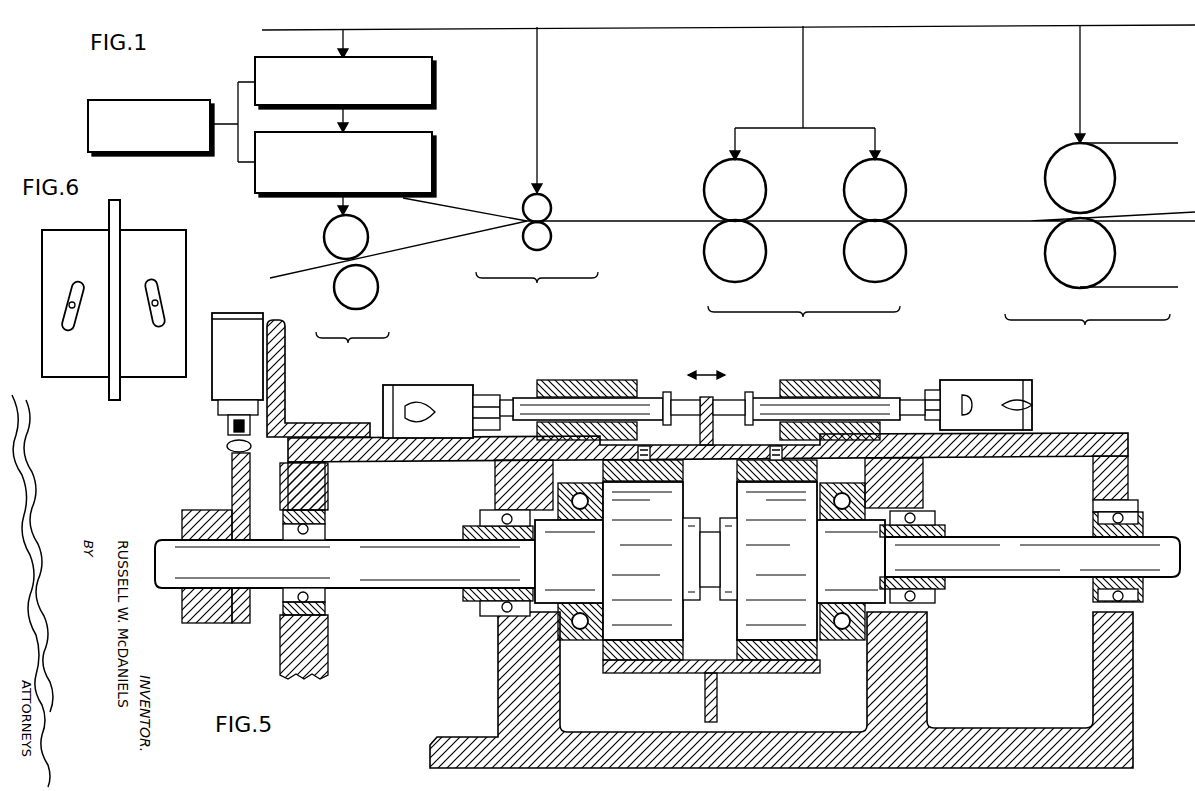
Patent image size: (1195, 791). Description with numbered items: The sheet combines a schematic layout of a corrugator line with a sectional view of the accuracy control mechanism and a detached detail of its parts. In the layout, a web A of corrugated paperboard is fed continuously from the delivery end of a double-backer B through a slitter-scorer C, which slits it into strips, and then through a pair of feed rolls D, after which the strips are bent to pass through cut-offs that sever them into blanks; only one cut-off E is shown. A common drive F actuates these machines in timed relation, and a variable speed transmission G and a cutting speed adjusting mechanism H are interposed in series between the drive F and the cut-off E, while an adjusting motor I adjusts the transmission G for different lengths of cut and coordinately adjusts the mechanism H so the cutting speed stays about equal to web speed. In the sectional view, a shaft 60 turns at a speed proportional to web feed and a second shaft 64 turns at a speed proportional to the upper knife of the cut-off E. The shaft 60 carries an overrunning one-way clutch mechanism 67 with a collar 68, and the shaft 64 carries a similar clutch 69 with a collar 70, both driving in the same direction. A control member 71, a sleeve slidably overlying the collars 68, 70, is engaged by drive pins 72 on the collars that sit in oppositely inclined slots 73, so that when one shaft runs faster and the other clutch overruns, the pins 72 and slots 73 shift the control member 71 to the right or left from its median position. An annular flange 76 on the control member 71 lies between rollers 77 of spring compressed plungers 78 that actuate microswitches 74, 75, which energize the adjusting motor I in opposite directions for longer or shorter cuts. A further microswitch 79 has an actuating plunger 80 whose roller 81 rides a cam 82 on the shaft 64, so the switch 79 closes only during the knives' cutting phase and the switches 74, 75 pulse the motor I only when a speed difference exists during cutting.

In FIG. 1, the web A is at (962, 220).
In FIG. 1, the double-backer B is at (1089, 188).
In FIG. 1, the slitter-scorer C is at (805, 184).
In FIG. 1, the feed rolls D is at (537, 168).
In FIG. 1, the cut-off E is at (352, 291).
In FIG. 1, the common drive F is at (651, 26).
In FIG. 1, the variable speed transmission G is at (255, 60).
In FIG. 1, the cutting speed adjusting mechanism H is at (255, 182).
In FIG. 1, the adjusting motor I is at (148, 100).
In FIG. 5, the shaft 60 is at (1038, 537).
In FIG. 5, the second shaft 64 is at (164, 537).
In FIG. 5, the one-way clutch mechanism 67 is at (800, 620).
In FIG. 5, the collar 68 is at (815, 655).
In FIG. 5, the clutch 69 is at (615, 620).
In FIG. 5, the collar 70 is at (605, 655).
In FIG. 6, the control member 71 is at (50, 236).
In FIG. 5, the control member 71 is at (664, 664).
In FIG. 6, the drive pins 72 is at (68, 305).
In FIG. 5, the drive pins 72 is at (646, 452).
In FIG. 6, the inclined slots 73 is at (70, 286).
In FIG. 5, the microswitch 74 is at (987, 382).
In FIG. 5, the microswitch 75 is at (434, 385).
In FIG. 6, the annular flange 76 is at (117, 216).
In FIG. 5, the annular flange 76 is at (712, 398).
In FIG. 5, the rollers 77 is at (668, 392).
In FIG. 5, the spring compressed plungers 78 is at (602, 400).
In FIG. 5, the microswitch 79 is at (225, 388).
In FIG. 5, the actuating plunger 80 is at (228, 419).
In FIG. 5, the roller 81 is at (230, 447).
In FIG. 5, the cam 82 is at (232, 480).